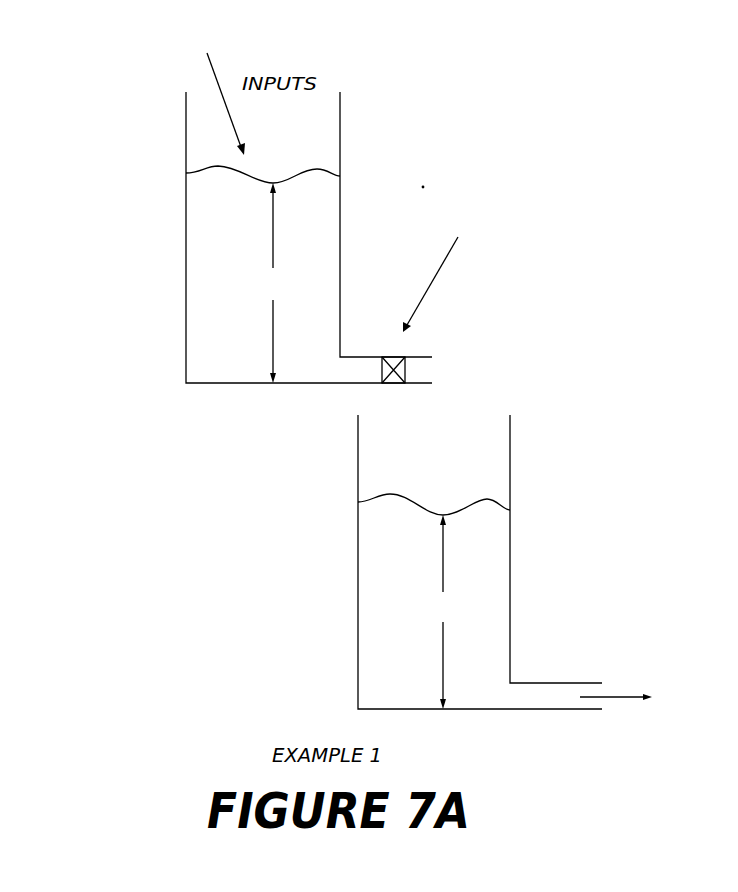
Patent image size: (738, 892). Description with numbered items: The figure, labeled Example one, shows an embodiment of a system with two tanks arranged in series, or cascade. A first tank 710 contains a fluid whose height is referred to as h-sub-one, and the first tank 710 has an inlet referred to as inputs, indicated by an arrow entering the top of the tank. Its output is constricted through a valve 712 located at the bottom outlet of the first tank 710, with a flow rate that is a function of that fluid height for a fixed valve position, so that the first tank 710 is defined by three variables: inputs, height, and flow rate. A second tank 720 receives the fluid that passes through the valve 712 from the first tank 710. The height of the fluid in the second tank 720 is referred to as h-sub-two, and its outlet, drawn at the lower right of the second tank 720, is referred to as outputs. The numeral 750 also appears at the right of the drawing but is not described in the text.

The first tank 710 is at (186, 353).
The valve 712 is at (541, 273).
The second tank 720 is at (358, 590).
The output 750 is at (737, 561).